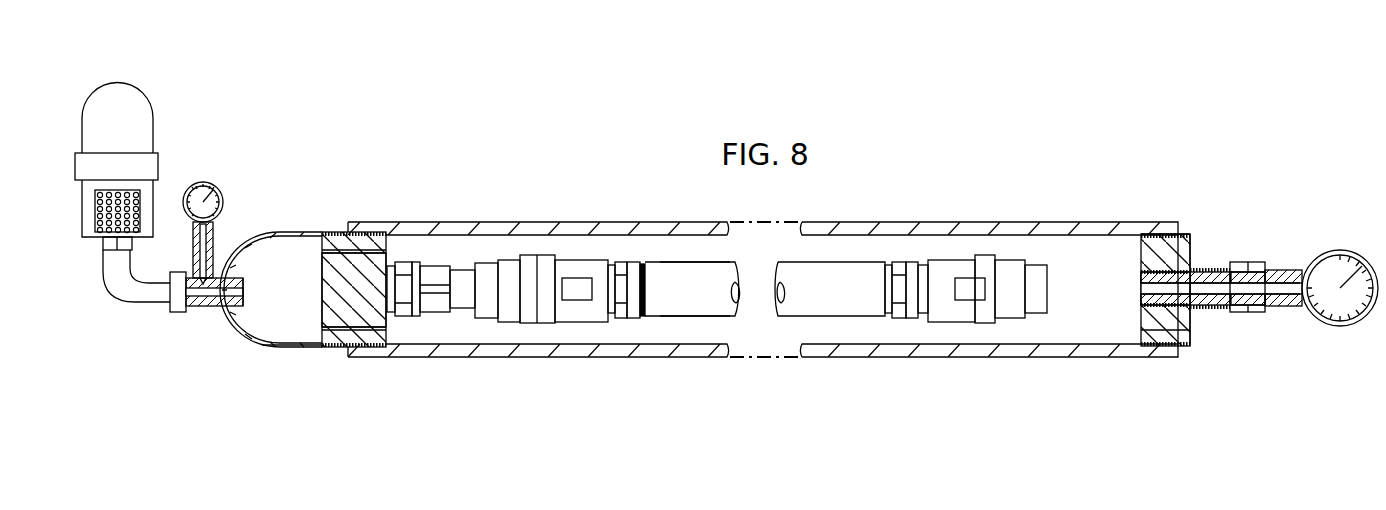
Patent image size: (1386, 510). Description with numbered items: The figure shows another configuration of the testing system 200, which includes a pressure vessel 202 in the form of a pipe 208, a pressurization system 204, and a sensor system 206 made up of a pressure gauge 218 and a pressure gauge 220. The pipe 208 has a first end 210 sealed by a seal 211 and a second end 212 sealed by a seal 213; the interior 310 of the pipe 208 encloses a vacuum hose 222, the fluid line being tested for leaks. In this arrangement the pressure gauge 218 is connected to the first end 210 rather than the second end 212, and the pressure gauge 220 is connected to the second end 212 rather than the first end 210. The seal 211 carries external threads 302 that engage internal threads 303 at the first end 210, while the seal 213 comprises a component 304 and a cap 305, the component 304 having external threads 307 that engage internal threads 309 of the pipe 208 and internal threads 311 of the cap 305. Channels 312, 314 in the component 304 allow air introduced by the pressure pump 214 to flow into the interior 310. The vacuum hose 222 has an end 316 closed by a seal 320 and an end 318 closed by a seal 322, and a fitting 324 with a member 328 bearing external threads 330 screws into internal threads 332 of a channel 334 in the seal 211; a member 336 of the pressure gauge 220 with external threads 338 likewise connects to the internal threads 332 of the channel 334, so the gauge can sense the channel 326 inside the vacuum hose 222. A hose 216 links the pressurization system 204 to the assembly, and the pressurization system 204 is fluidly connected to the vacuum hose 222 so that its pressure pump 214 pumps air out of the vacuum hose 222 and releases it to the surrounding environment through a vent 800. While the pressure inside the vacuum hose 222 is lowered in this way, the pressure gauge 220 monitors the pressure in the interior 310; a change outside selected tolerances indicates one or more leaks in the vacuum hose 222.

The testing system 200 is at (934, 150).
The pressure vessel 202 is at (490, 220).
The pressurization system 204 is at (176, 82).
The sensor system 206 is at (1340, 249).
The pipe 208 is at (575, 220).
The first end 210 is at (1185, 230).
The seal 211 is at (1192, 346).
The second end 212 is at (369, 198).
The seal 213 is at (276, 351).
The pressure pump 214 is at (172, 118).
The hose 216 is at (160, 302).
The pressure gauge 218 is at (203, 182).
The pressure gauge 220 is at (1338, 327).
The vacuum hose 222 is at (684, 262).
The external threads 302 is at (1162, 348).
The internal threads 303 is at (1122, 348).
The component 304 is at (330, 300).
The cap 305 is at (246, 345).
The external threads 307 is at (345, 230).
The internal threads 309 is at (392, 343).
The interior 310 is at (690, 330).
The internal threads 311 is at (320, 238).
The channel 312 is at (324, 265).
The channel 314 is at (339, 349).
The end 316 is at (641, 326).
The end 318 is at (909, 324).
The seal 320 is at (573, 329).
The seal 322 is at (1001, 328).
The fitting 324 is at (436, 320).
The channel 326 is at (764, 304).
The member 328 is at (1143, 268).
The external threads 330 is at (1143, 302).
The internal threads 332 is at (1186, 342).
The channel 334 is at (1200, 270).
The member 336 is at (1258, 268).
The external threads 338 is at (1226, 310).
The vent 800 is at (104, 244).